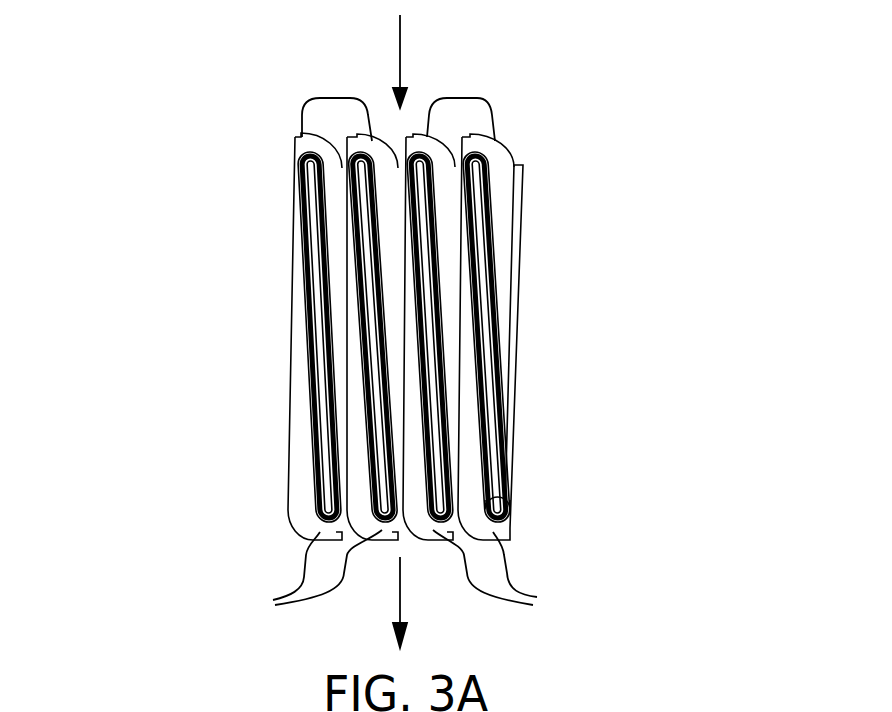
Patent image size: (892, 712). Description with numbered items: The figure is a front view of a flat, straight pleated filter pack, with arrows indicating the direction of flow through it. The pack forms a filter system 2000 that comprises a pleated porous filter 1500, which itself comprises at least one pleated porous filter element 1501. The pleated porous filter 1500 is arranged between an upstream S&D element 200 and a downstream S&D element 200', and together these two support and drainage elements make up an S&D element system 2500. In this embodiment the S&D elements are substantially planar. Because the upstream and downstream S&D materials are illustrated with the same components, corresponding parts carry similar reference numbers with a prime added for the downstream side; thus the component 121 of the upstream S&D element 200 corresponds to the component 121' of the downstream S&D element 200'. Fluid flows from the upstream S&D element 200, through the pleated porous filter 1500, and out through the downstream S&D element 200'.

The filter system 2000 is at (80, 218).
The S&D element system 2500 is at (298, 497).
The upstream S&D element 200 is at (399, 84).
The downstream S&D element 200' is at (405, 575).
The upstream S&D material component 121 is at (452, 337).
The downstream S&D material component 121' is at (541, 489).
The pleated porous filter 1500 is at (517, 257).
The pleated porous filter element 1501 is at (514, 346).